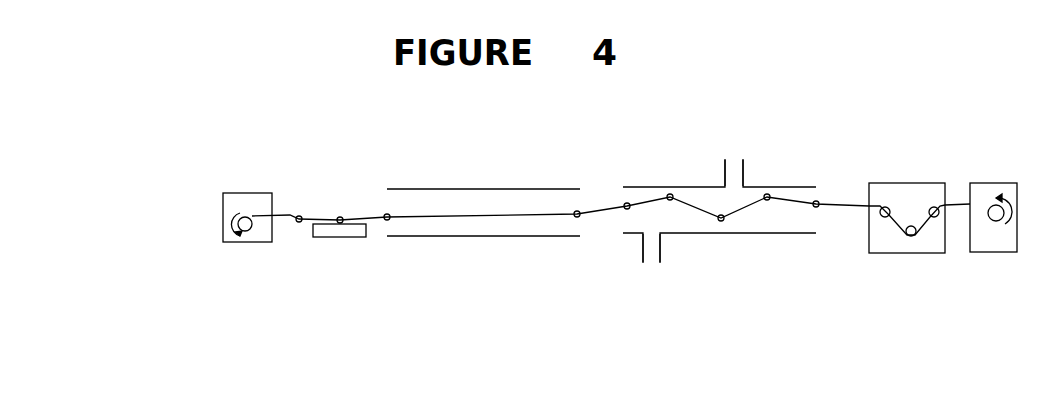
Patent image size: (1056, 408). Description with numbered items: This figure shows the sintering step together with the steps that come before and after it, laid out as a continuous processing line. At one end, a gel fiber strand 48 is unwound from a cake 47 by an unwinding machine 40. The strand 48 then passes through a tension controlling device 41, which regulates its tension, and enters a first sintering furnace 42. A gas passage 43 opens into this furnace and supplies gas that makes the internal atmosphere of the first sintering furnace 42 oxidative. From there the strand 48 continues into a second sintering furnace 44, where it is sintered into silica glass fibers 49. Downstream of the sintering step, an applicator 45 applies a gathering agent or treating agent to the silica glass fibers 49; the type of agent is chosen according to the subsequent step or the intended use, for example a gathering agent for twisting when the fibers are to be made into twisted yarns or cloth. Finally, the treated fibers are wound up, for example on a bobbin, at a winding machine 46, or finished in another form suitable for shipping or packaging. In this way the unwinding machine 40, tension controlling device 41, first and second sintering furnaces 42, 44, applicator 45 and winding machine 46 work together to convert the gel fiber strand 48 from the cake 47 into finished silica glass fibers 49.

The unwinding machine 40 is at (1020, 253).
The tension controlling device 41 is at (904, 257).
The first sintering furnace 42 is at (740, 237).
The gas passage 43 is at (733, 165).
The second sintering furnace 44 is at (477, 242).
The applicator 45 is at (335, 242).
The winding machine 46 is at (247, 245).
The cake 47 is at (995, 221).
The gel fiber strand 48 is at (845, 204).
The silica glass fibers 49 is at (290, 212).